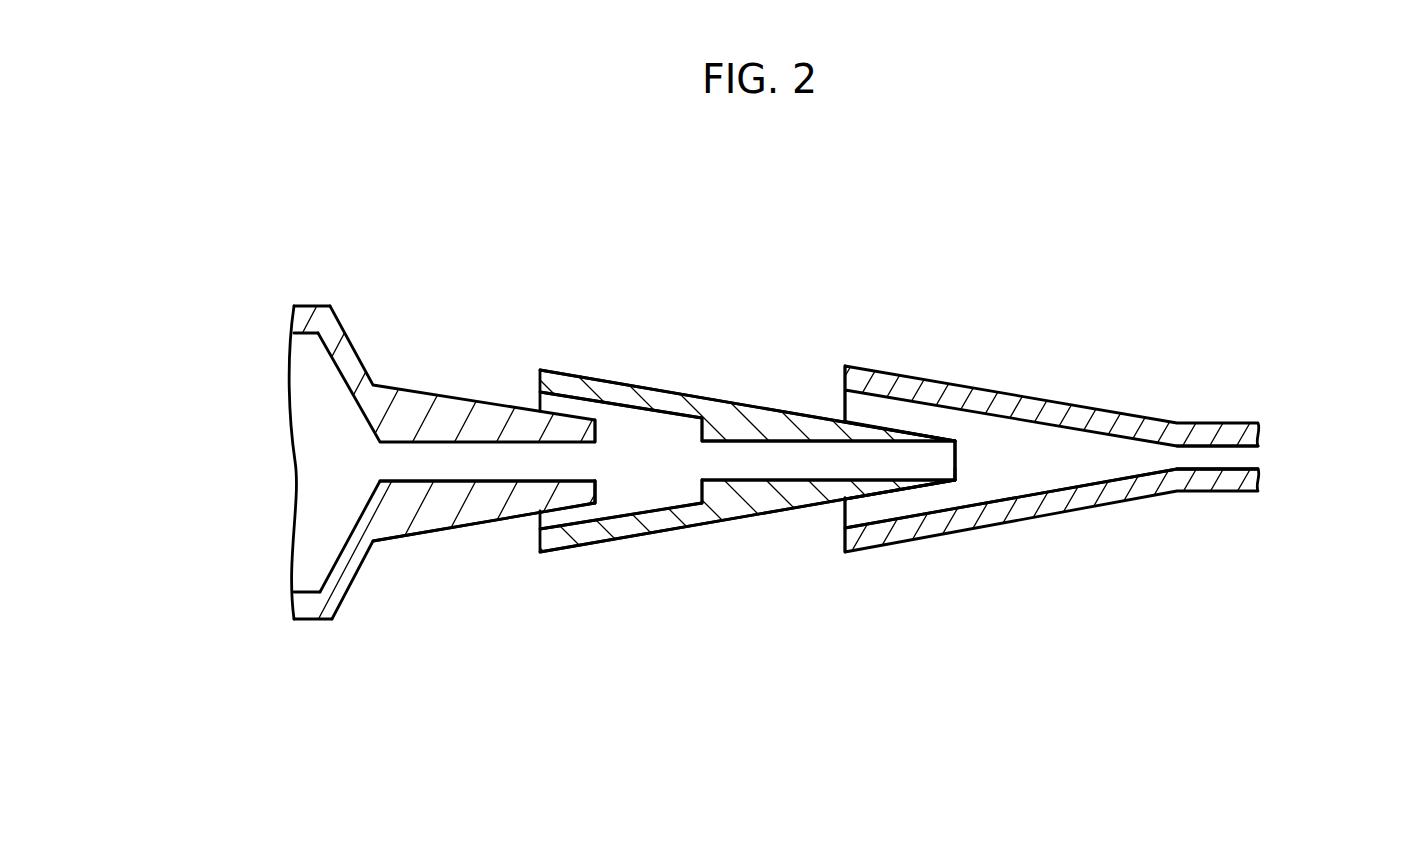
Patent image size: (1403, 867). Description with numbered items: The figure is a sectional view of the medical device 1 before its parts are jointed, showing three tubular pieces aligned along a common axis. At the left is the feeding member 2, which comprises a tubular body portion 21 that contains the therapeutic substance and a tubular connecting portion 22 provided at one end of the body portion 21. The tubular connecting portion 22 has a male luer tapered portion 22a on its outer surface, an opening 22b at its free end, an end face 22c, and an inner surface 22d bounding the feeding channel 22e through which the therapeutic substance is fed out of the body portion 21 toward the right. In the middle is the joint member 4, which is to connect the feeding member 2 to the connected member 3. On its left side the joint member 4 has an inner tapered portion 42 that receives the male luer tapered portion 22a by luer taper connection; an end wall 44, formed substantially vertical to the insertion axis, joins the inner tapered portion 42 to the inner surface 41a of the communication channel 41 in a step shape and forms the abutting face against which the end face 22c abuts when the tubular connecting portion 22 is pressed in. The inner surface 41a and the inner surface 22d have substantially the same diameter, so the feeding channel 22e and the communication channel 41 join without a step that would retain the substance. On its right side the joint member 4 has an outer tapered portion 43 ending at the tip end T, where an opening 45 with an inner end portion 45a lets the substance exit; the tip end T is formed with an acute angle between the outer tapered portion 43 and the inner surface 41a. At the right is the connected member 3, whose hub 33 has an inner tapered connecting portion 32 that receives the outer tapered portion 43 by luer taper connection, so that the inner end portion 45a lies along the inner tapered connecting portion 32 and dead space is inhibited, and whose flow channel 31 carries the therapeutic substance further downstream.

The medical device 1 is at (1078, 280).
The feeding member 2 is at (362, 330).
The tubular body portion 21 is at (312, 318).
The tubular connecting portion 22 is at (463, 407).
The male luer tapered portion 22a is at (460, 533).
The opening 22b is at (600, 463).
The end face 22c is at (600, 502).
The inner surface 22d is at (584, 478).
The feeding channel 22e is at (420, 463).
The joint member 4 is at (702, 388).
The communication channel 41 is at (868, 489).
The inner surface 41a is at (708, 480).
The inner tapered portion 42 is at (626, 414).
The outer tapered portion 43 is at (806, 410).
The end wall 44 is at (696, 432).
The opening 45 is at (960, 458).
The inner end portion 45a is at (946, 480).
The tip end T is at (955, 440).
The connected member 3 is at (1153, 413).
The flow channel 31 is at (1225, 460).
The inner tapered connecting portion 32 is at (1135, 477).
The hub 33 is at (978, 400).